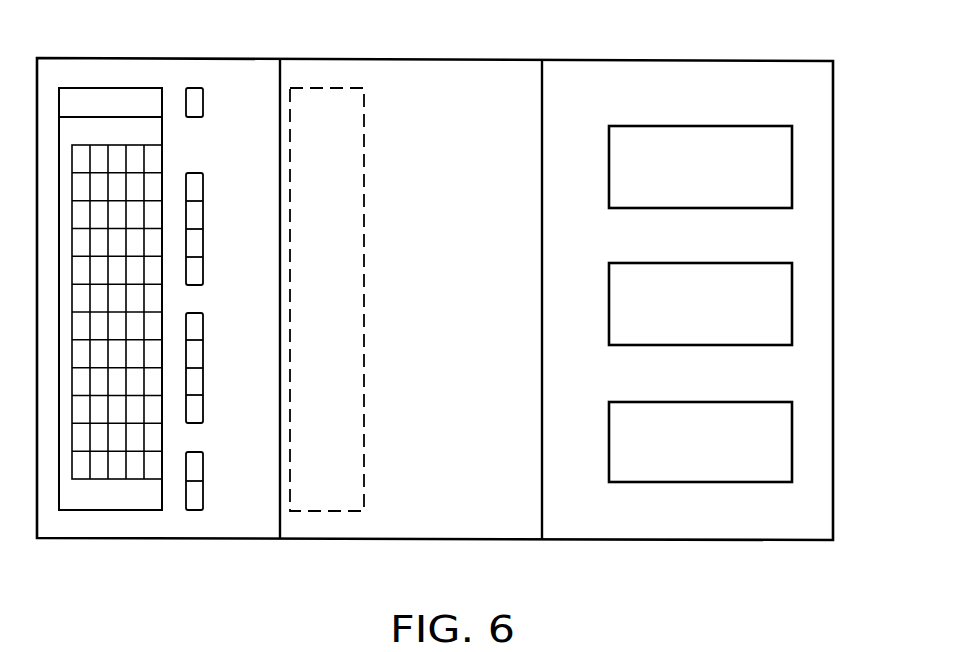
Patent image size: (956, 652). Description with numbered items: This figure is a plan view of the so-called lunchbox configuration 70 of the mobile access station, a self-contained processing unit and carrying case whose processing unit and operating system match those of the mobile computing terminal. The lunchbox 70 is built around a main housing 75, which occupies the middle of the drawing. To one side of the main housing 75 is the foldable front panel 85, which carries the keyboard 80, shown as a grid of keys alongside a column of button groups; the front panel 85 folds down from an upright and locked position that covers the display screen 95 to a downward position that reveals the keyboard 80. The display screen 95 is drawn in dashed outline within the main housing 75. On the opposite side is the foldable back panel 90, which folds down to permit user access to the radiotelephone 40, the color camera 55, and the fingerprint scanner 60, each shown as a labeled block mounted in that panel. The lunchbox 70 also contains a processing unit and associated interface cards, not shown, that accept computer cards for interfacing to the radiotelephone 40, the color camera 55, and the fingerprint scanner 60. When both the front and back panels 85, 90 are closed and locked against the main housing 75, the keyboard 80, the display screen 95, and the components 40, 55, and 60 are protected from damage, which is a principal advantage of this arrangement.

The lunchbox configuration 70 is at (288, 52).
The main housing 75 is at (476, 60).
The foldable back panel 90 is at (740, 62).
The keyboard 80 is at (132, 522).
The foldable front panel 85 is at (239, 538).
The display screen 95 is at (318, 112).
The radiotelephone 40 is at (702, 128).
The color camera 55 is at (708, 263).
The fingerprint scanner 60 is at (708, 402).